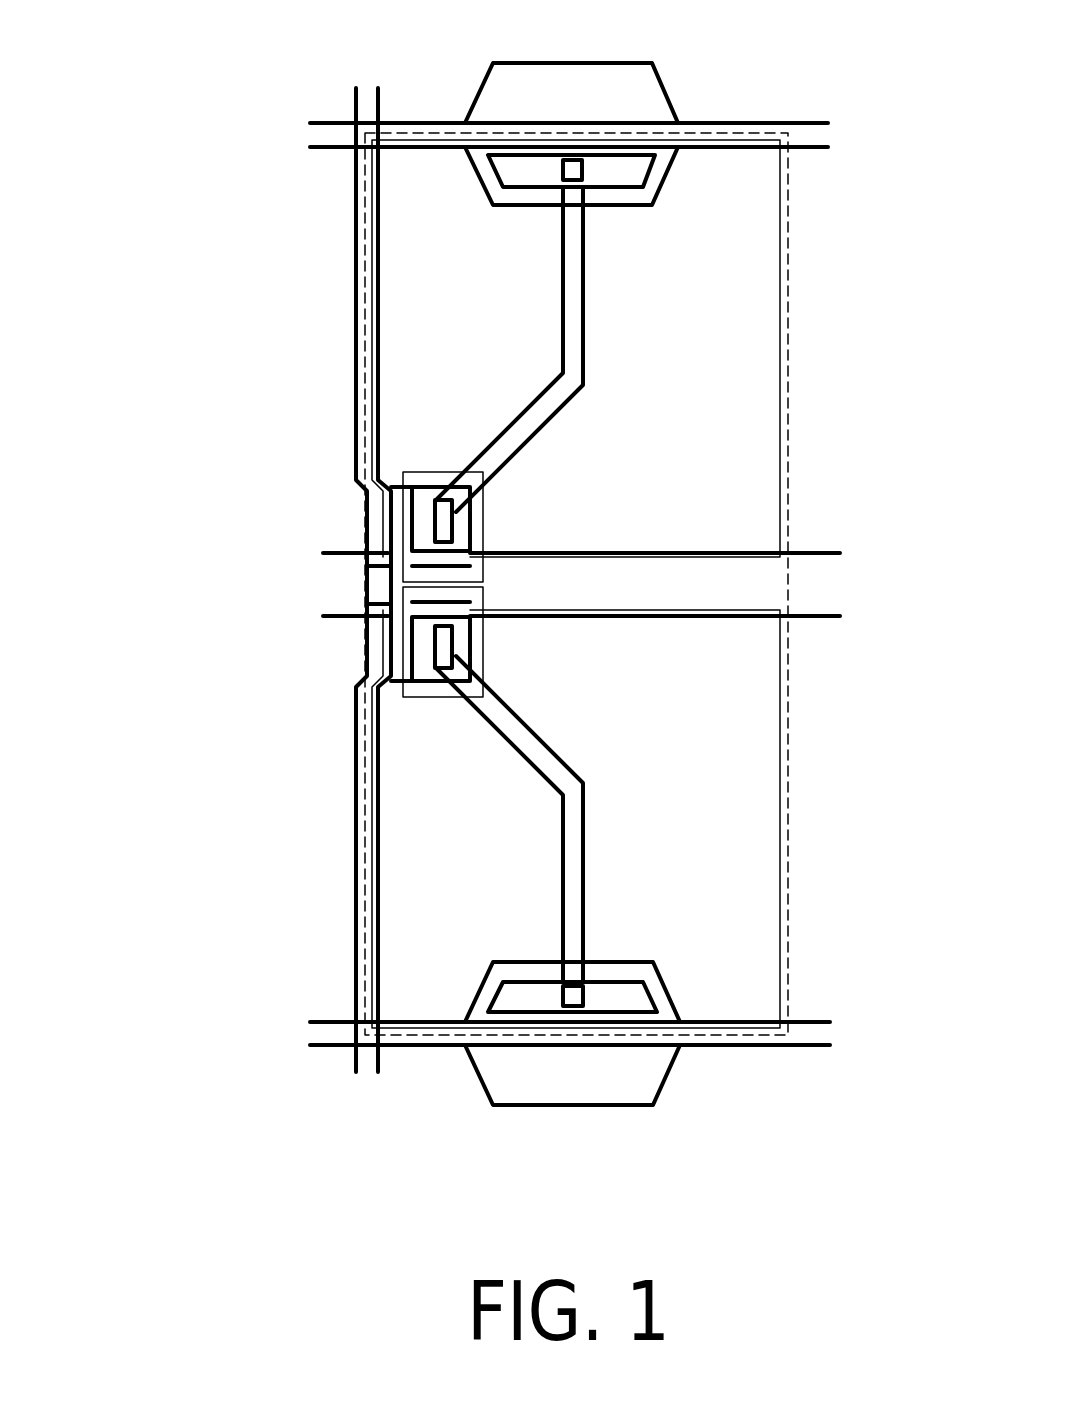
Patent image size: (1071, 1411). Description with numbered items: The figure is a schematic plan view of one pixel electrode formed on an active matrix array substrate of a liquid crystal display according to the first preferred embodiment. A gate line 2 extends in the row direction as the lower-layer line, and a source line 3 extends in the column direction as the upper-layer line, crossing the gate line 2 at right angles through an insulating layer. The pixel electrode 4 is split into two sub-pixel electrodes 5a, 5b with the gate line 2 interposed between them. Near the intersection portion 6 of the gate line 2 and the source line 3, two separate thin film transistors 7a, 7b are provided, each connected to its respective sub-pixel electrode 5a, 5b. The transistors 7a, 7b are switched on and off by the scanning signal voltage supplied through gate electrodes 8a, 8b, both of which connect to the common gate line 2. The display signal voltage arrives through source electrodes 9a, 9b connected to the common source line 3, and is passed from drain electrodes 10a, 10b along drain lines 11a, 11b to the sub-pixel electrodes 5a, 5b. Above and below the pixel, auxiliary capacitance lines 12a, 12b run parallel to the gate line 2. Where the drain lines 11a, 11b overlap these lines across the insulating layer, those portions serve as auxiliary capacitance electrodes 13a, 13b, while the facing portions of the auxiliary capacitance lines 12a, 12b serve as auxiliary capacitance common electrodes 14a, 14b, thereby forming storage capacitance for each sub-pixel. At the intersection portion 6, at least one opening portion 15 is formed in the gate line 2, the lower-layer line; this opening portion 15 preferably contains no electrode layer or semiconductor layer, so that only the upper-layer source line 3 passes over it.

The gate line 2 is at (805, 550).
The source line 3 is at (326, 224).
The pixel electrode 4 is at (788, 290).
The sub-pixel electrode 5a is at (768, 360).
The sub-pixel electrode 5b is at (768, 798).
The intersection portion 6 is at (347, 587).
The thin film transistor 7a is at (488, 490).
The thin film transistor 7b is at (488, 680).
The gate electrode 8a is at (379, 511).
The gate electrode 8b is at (379, 655).
The source electrode 9a is at (460, 538).
The source electrode 9b is at (460, 628).
The drain electrode 10a is at (437, 503).
The drain electrode 10b is at (437, 668).
The drain line 11a is at (585, 358).
The drain line 11b is at (585, 828).
The auxiliary capacitance line 12a is at (801, 122).
The auxiliary capacitance line 12b is at (800, 1046).
The auxiliary capacitance electrode 13a is at (663, 178).
The auxiliary capacitance electrode 13b is at (662, 978).
The auxiliary capacitance common electrode 14a is at (647, 180).
The auxiliary capacitance common electrode 14b is at (648, 990).
The opening portion 15 is at (368, 577).